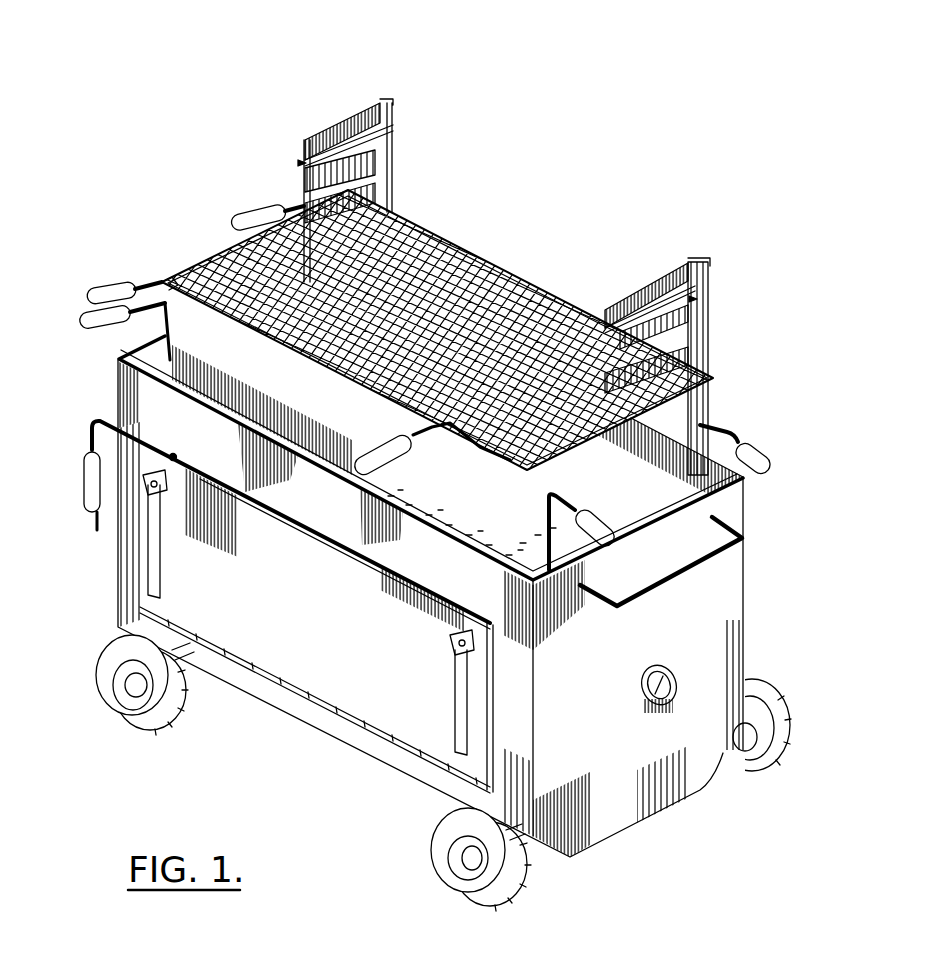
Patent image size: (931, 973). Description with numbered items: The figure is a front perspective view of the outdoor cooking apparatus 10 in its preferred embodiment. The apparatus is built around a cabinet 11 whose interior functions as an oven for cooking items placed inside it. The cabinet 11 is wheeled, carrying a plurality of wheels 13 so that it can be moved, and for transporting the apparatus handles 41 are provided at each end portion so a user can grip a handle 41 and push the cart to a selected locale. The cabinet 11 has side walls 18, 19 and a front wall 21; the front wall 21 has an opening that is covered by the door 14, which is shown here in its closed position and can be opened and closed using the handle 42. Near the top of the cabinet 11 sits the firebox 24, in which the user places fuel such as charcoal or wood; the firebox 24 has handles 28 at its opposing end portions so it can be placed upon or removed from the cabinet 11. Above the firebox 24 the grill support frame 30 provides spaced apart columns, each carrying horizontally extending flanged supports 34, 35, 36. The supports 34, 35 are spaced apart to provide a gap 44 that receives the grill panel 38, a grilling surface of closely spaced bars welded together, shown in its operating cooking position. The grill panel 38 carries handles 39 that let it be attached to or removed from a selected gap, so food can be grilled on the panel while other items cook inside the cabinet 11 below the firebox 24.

The outdoor cooking apparatus 10 is at (510, 80).
The cabinet 11 is at (735, 640).
The wheels 13 is at (160, 727).
The door 14 is at (249, 597).
The side wall 18 is at (115, 403).
The side wall 19 is at (628, 810).
The front wall 21 is at (222, 451).
The firebox 24 is at (612, 489).
The handles 28 is at (230, 220).
The grill support frame 30 is at (392, 106).
The flanged support 34 is at (340, 122).
The flanged support 35 is at (305, 180).
The flanged support 36 is at (383, 200).
The grill panel 38 is at (478, 262).
The handles 39 is at (96, 330).
The handles 41 is at (112, 382).
The handle 42 is at (97, 527).
The gap 44 is at (298, 163).